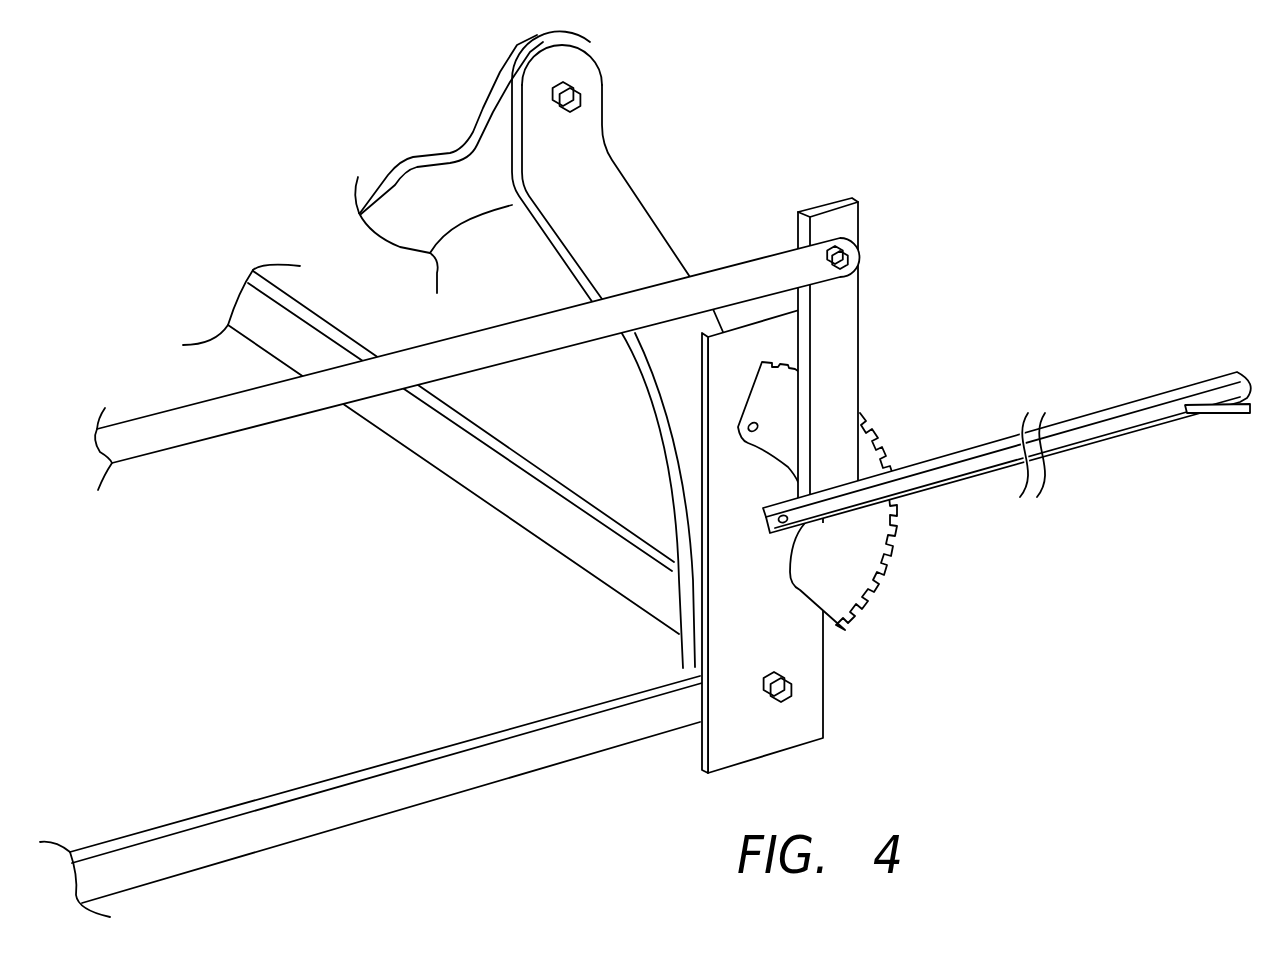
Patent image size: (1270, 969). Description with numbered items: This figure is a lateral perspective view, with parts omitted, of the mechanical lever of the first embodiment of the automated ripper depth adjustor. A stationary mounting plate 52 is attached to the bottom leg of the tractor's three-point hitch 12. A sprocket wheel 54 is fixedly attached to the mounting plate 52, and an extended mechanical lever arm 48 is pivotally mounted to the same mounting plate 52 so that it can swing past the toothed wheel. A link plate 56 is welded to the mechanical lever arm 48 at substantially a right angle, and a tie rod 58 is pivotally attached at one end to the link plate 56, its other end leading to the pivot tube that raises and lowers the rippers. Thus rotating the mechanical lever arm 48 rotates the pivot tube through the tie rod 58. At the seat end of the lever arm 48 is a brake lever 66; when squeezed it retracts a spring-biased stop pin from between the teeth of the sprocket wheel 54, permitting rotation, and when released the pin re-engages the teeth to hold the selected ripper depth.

The three-point hitch 12 is at (612, 193).
The mechanical lever arm 48 is at (1083, 412).
The mounting plate 52 is at (813, 712).
The sprocket wheel 54 is at (845, 595).
The link plate 56 is at (848, 237).
The tie rod 58 is at (726, 282).
The brake lever 66 is at (1235, 418).